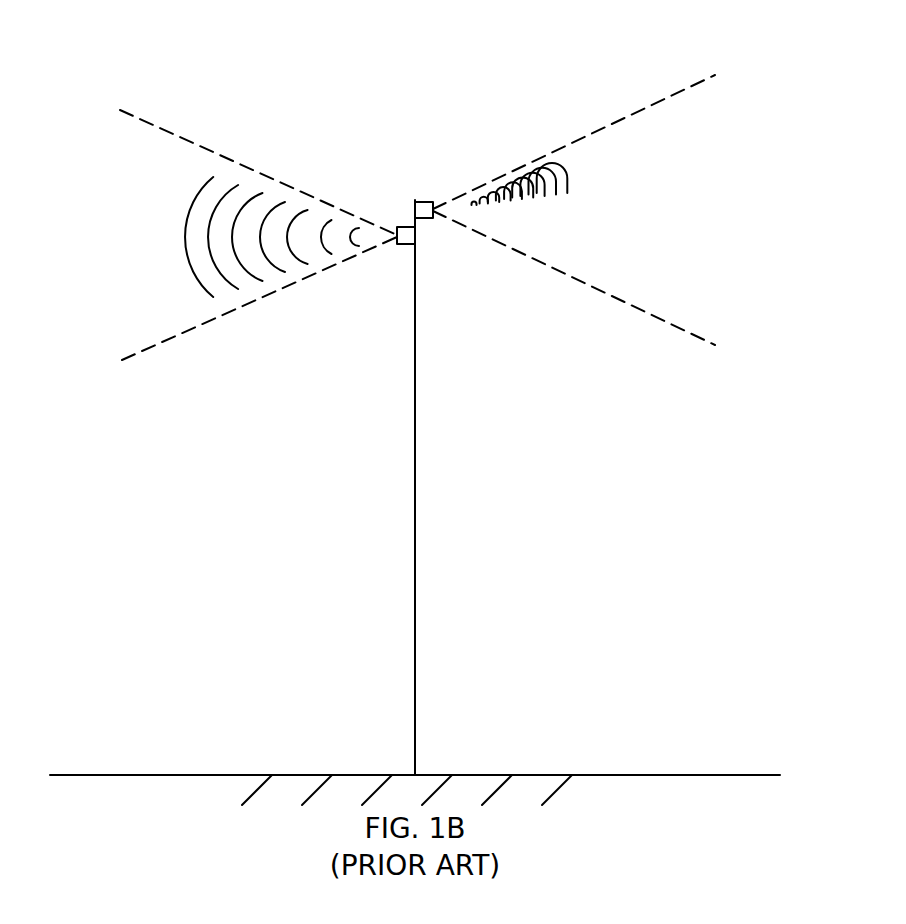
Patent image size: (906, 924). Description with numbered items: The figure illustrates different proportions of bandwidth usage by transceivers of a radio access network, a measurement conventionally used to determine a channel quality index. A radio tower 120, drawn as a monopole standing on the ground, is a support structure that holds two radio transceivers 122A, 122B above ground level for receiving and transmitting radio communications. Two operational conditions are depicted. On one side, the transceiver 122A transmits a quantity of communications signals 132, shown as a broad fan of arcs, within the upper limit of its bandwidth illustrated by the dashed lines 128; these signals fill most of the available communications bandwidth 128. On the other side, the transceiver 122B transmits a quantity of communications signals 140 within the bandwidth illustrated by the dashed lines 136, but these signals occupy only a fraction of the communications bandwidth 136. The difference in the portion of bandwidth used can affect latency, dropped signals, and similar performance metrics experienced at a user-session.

The radio tower 120 is at (414, 499).
The transceiver 122A is at (396, 228).
The transceiver 122B is at (432, 202).
The dashed lines 128 is at (172, 92).
The communications signals 132 is at (189, 263).
The dashed lines 136 is at (593, 114).
The communications signals 140 is at (573, 194).